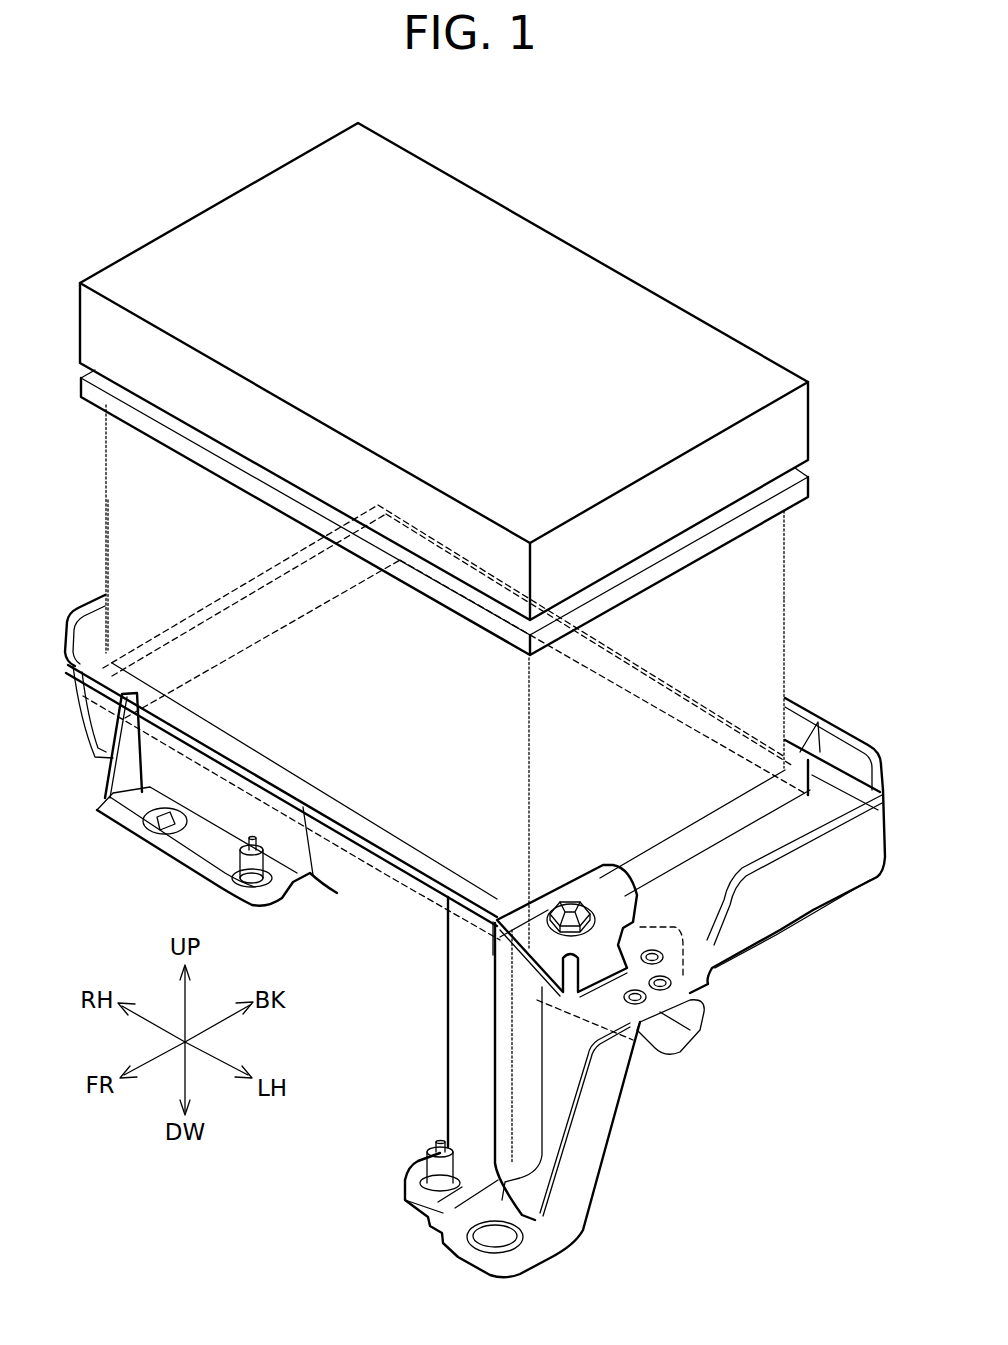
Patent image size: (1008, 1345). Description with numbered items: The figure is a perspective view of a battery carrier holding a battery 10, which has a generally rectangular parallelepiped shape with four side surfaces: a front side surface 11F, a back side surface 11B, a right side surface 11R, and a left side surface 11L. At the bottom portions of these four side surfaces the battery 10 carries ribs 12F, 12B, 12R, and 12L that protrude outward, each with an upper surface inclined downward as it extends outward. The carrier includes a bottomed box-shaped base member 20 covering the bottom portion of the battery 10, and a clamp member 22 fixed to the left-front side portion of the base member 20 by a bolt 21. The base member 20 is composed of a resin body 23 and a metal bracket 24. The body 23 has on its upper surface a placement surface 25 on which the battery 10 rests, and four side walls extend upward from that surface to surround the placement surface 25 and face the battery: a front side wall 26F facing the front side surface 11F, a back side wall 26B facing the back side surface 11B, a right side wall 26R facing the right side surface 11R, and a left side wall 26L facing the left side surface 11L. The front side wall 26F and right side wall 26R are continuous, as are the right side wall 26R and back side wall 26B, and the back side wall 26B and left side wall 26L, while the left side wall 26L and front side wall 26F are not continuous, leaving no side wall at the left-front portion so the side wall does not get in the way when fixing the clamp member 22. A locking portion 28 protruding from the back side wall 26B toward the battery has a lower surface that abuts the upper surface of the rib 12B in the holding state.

The battery 10 is at (653, 291).
The right side surface 11R is at (143, 470).
The front side surface 11F is at (153, 547).
The back side surface 11B is at (752, 573).
The left side surface 11L is at (755, 657).
The rib 12R is at (253, 576).
The rib 12F is at (232, 753).
The rib 12B is at (625, 665).
The rib 12L is at (688, 832).
The base member 20 is at (637, 1055).
The bolt 21 is at (568, 902).
The clamp member 22 is at (535, 955).
The body 23 is at (737, 953).
The bracket 24 is at (700, 1012).
The placement surface 25 is at (660, 897).
The right side wall 26R is at (97, 630).
The front side wall 26F is at (388, 888).
The back side wall 26B is at (838, 747).
The left side wall 26L is at (797, 873).
The locking portion 28 is at (832, 780).